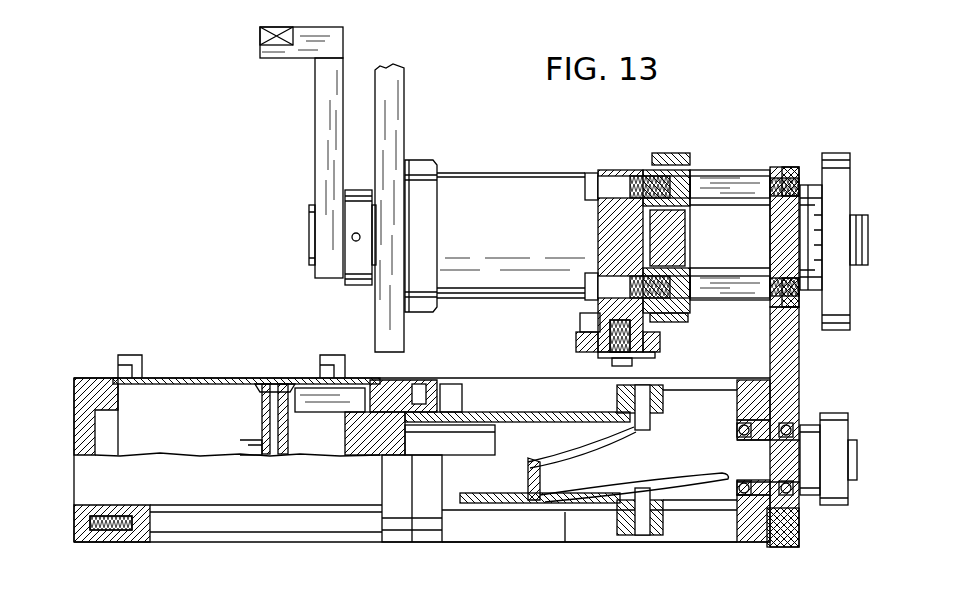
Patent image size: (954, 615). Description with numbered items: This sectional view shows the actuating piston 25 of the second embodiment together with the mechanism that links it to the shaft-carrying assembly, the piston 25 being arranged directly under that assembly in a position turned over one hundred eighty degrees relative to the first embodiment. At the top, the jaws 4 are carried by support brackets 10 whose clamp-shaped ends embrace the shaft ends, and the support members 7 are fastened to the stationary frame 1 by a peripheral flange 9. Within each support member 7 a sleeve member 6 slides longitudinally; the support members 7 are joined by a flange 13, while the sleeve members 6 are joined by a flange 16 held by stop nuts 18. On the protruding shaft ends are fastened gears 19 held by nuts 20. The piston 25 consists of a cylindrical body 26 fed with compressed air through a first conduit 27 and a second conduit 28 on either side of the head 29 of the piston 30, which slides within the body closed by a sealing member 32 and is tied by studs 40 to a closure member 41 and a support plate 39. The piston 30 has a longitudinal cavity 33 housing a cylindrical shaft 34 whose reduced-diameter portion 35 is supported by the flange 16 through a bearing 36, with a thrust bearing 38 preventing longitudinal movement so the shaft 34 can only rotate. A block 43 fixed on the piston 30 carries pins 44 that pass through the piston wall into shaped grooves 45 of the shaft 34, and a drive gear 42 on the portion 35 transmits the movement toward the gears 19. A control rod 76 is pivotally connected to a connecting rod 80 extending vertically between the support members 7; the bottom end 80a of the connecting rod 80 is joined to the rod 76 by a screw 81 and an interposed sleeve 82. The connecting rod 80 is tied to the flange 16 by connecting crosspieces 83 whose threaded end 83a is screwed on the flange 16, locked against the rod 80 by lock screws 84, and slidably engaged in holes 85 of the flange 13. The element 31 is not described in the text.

The stationary frame 1 is at (397, 90).
The movable jaws 4 is at (272, 47).
The sleeve member 6 is at (730, 222).
The support members 7 is at (480, 197).
The peripheral flange 9 is at (427, 160).
The support brackets 10 is at (330, 112).
The flange 13 is at (682, 145).
The flange 16 is at (778, 172).
The stop nuts 18 is at (812, 205).
The gears 19 is at (840, 170).
The nuts 20 is at (860, 253).
The control piston 25 is at (210, 372).
The cylindrical body 26 is at (185, 378).
The first conduit 27 is at (328, 362).
The second conduit 28 is at (122, 355).
The head 29 is at (270, 385).
The piston 30 is at (362, 447).
The block 31 is at (390, 386).
The sealing member 32 is at (74, 430).
The longitudinal cavity 33 is at (467, 436).
The cylindrical shaft 34 is at (575, 500).
The reduced-diameter portion 35 is at (795, 506).
The bearing 36 is at (792, 432).
The thrust bearing 38 is at (790, 378).
The support plate 39 is at (748, 546).
The studs 40 is at (716, 396).
The closure member 41 is at (420, 392).
The drive gear 42 is at (838, 490).
The block 43 is at (622, 526).
The pins 44 is at (644, 400).
The shaped groove 45 is at (584, 462).
The control rod 76 is at (659, 340).
The connecting rod 80 is at (612, 218).
The bottom end 80a is at (580, 322).
The screw 81 is at (606, 362).
The sleeve 82 is at (577, 338).
The connecting crosspieces 83 is at (712, 187).
The threaded end 83a is at (790, 180).
The lock screws 84 is at (608, 187).
The holes 85 is at (652, 170).